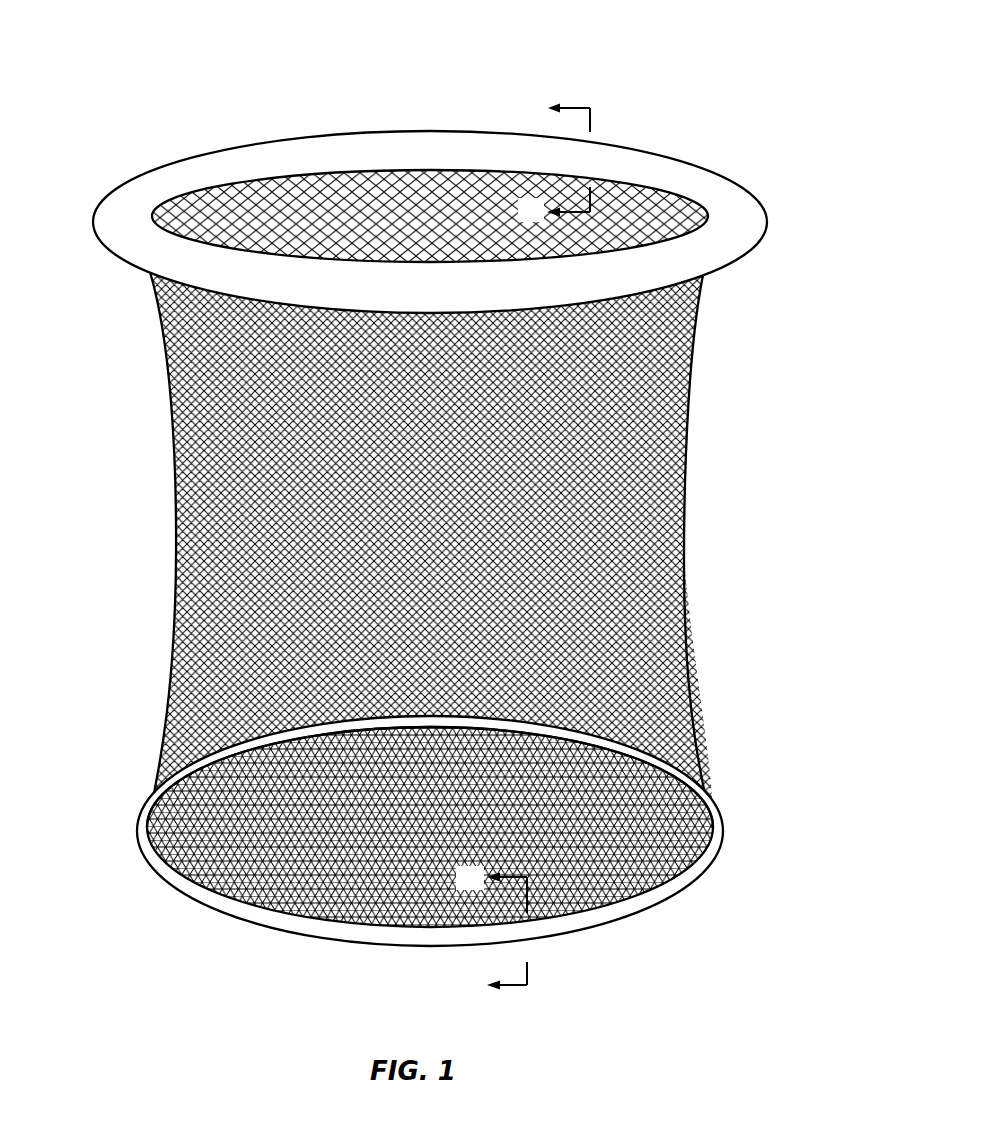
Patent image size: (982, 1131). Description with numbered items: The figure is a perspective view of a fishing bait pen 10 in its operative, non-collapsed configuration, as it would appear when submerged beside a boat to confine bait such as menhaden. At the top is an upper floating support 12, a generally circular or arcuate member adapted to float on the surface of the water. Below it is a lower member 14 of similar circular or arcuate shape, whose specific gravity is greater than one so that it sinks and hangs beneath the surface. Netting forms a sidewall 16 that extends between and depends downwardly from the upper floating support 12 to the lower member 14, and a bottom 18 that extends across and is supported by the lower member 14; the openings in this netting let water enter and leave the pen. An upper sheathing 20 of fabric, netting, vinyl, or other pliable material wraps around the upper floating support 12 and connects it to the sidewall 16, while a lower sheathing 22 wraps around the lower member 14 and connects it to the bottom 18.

The fishing bait pen 10 is at (455, 506).
The upper floating support 12 is at (760, 185).
The lower member 14 is at (647, 922).
The sidewall 16 is at (158, 557).
The bottom 18 is at (307, 868).
The upper sheathing 20 is at (137, 222).
The lower sheathing 22 is at (193, 878).